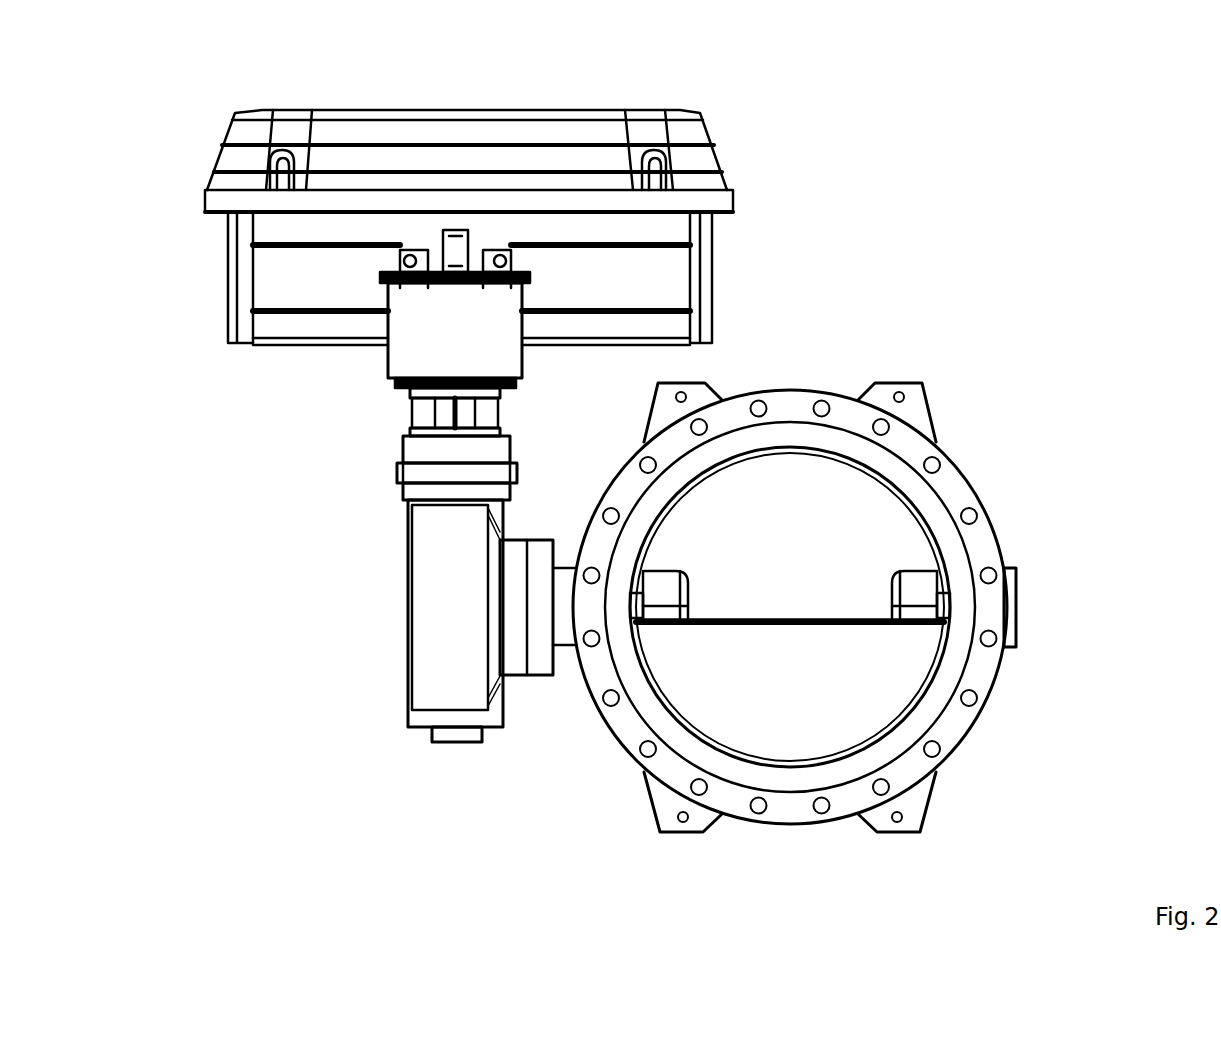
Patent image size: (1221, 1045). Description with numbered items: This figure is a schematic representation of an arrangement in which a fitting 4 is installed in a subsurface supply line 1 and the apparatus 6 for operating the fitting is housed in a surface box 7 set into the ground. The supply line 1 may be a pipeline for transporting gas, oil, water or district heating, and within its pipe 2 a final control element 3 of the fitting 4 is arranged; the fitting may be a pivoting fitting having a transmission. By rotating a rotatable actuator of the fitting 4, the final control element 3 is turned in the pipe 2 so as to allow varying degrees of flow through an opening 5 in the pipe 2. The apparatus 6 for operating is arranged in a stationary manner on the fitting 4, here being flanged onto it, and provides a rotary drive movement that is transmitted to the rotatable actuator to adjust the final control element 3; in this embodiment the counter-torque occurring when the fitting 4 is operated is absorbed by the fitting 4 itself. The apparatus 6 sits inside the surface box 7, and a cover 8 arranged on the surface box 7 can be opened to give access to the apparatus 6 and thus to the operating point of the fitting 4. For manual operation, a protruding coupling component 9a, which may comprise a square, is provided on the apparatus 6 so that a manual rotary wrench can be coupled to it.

The supply line 1 is at (960, 492).
The pipe 2 is at (960, 598).
The final control element 3 is at (788, 618).
The fitting 4 is at (430, 604).
The opening 5 is at (802, 740).
The apparatus for operating 6 is at (408, 345).
The surface box 7 is at (243, 266).
The cover 8 is at (243, 120).
The coupling component 9a is at (455, 230).